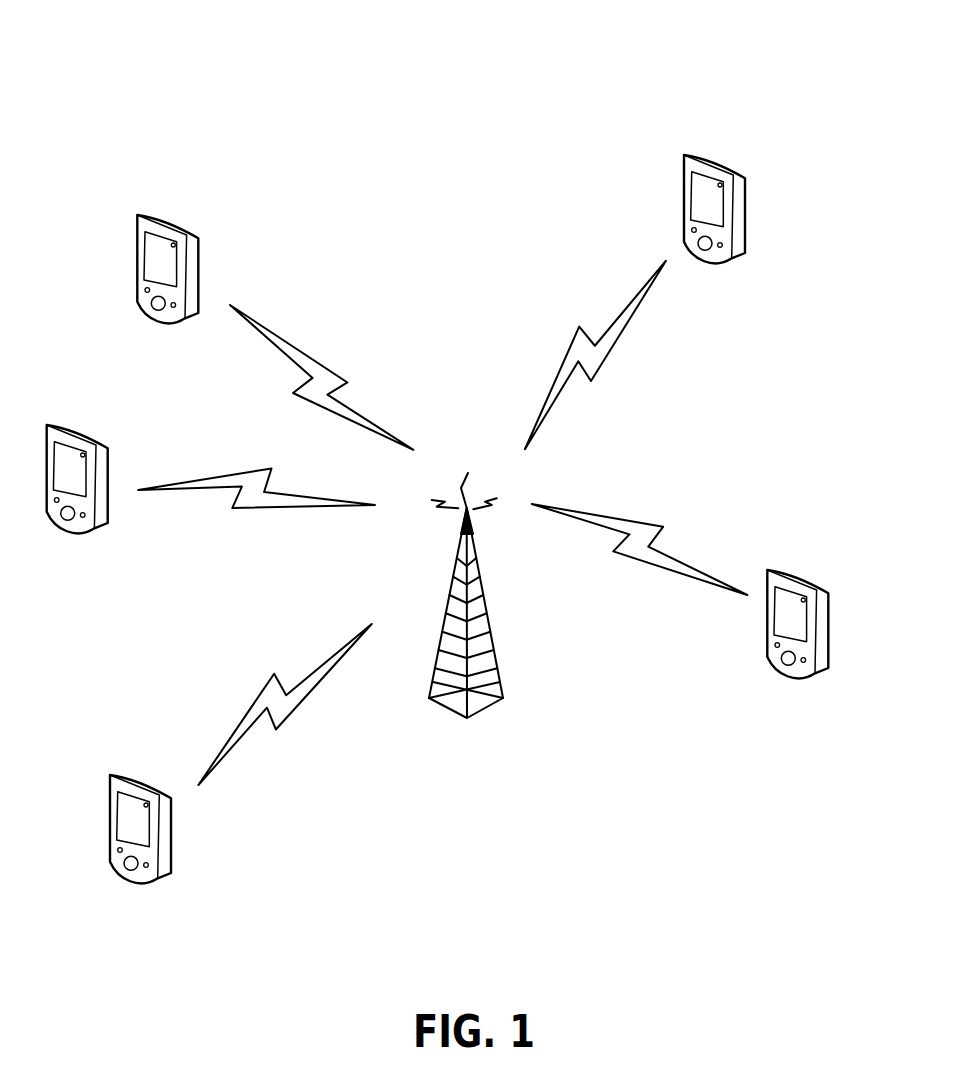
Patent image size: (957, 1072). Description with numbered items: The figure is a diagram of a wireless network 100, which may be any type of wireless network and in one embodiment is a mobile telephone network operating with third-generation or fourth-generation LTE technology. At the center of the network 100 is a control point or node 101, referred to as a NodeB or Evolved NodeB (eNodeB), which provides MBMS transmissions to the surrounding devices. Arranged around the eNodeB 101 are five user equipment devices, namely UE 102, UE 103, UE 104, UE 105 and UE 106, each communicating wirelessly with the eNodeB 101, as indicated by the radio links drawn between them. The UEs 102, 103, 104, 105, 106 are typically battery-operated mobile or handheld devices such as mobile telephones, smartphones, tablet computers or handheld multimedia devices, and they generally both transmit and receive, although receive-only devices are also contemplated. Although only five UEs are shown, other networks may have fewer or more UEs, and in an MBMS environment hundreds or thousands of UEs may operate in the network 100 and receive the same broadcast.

The wireless network 100 is at (580, 70).
The eNodeB 101 is at (497, 705).
The user equipment 102 is at (793, 573).
The user equipment 103 is at (722, 158).
The user equipment 104 is at (187, 227).
The user equipment 105 is at (96, 437).
The user equipment 106 is at (127, 772).